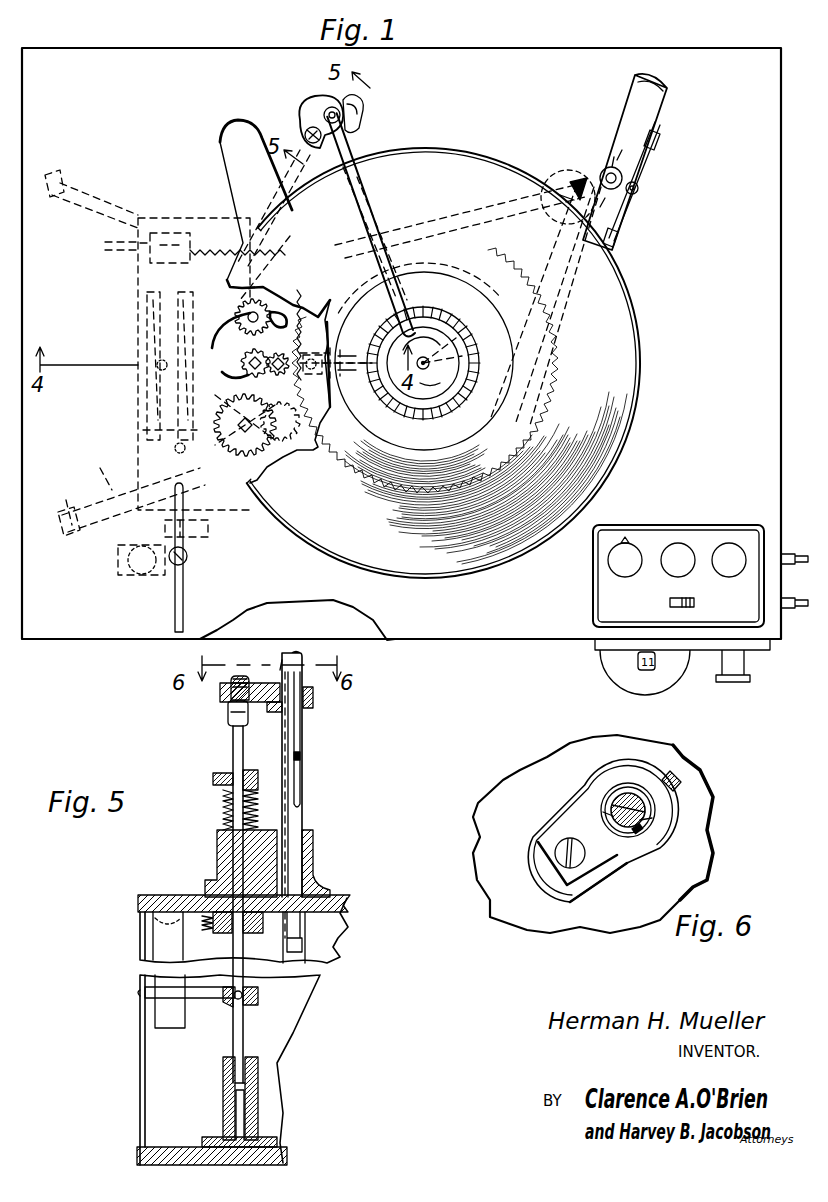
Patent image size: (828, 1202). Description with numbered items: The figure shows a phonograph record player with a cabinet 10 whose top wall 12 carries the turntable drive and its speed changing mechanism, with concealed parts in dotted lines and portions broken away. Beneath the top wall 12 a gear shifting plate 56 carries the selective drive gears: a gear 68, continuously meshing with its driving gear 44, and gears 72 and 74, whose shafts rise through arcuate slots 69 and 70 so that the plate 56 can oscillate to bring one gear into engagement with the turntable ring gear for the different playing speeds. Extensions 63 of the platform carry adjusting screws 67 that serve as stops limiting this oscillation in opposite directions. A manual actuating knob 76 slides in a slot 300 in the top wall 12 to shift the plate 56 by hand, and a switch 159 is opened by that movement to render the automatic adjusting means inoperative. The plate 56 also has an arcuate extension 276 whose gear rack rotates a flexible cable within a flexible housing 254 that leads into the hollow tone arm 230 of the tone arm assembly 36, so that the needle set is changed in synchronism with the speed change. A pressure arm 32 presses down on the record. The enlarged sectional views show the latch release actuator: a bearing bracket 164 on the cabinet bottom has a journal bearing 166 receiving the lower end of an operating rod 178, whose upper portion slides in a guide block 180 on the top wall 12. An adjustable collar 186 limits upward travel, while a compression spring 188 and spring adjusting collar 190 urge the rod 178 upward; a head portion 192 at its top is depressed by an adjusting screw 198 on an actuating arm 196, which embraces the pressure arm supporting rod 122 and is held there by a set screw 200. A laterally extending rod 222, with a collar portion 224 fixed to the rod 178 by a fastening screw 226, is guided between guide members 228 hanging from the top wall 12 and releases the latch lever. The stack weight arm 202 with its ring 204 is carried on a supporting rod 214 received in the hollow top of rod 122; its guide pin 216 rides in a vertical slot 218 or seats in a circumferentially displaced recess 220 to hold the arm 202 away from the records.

In FIG. 5, the cabinet 10 is at (333, 938).
In FIG. 1, the top wall 12 is at (503, 632).
In FIG. 5, the top wall 12 is at (153, 893).
In FIG. 6, the pressure arm 32 is at (652, 893).
In FIG. 1, the tone arm assembly 36 is at (659, 175).
In FIG. 1, the driving gear 44 is at (246, 364).
In FIG. 1, the gear shifting plate 56 is at (200, 240).
In FIG. 1, the extensions 63 is at (95, 495).
In FIG. 1, the adjusting screws 67 is at (66, 520).
In FIG. 1, the gear 68 is at (334, 335).
In FIG. 1, the arcuate slot 69 is at (222, 327).
In FIG. 1, the arcuate slot 70 is at (296, 410).
In FIG. 1, the gear 72 is at (246, 310).
In FIG. 1, the gear 74 is at (243, 443).
In FIG. 1, the manual actuating knob 76 is at (188, 556).
In FIG. 5, the pressure arm supporting rod 122 is at (288, 733).
In FIG. 6, the pressure arm supporting rod 122 is at (655, 812).
In FIG. 1, the switch 159 is at (140, 575).
In FIG. 5, the bearing bracket 164 is at (220, 1140).
In FIG. 5, the journal bearing 166 is at (248, 1095).
In FIG. 5, the operating rod 178 is at (240, 842).
In FIG. 5, the guide block 180 is at (232, 857).
In FIG. 5, the adjustable collar 186 is at (245, 936).
In FIG. 5, the compression spring 188 is at (225, 803).
In FIG. 5, the spring adjusting collar 190 is at (252, 770).
In FIG. 5, the head portion 192 is at (230, 714).
In FIG. 1, the actuating arm 196 is at (318, 120).
In FIG. 5, the actuating arm 196 is at (258, 690).
In FIG. 6, the actuating arm 196 is at (583, 827).
In FIG. 5, the adjusting screw 198 is at (229, 694).
In FIG. 6, the adjusting screw 198 is at (560, 862).
In FIG. 5, the set screw 200 is at (321, 705).
In FIG. 6, the set screw 200 is at (677, 783).
In FIG. 1, the arm 202 is at (374, 213).
In FIG. 1, the ring 204 is at (436, 408).
In FIG. 5, the supporting rod 214 is at (292, 923).
In FIG. 6, the supporting rod 214 is at (632, 798).
In FIG. 5, the guide pin 216 is at (300, 753).
In FIG. 6, the guide pin 216 is at (641, 833).
In FIG. 5, the vertical slot 218 is at (302, 780).
In FIG. 6, the vertical slot 218 is at (640, 835).
In FIG. 5, the recess 220 is at (282, 670).
In FIG. 6, the recess 220 is at (605, 826).
In FIG. 5, the laterally extending rod 222 is at (163, 995).
In FIG. 5, the collar portion 224 is at (258, 1000).
In FIG. 5, the fastening screw 226 is at (233, 998).
In FIG. 5, the guide members 228 is at (167, 950).
In FIG. 1, the tone arm 230 is at (627, 122).
In FIG. 1, the flexible housing 254 is at (580, 185).
In FIG. 1, the arcuate extension 276 is at (340, 243).
In FIG. 1, the slot 300 is at (212, 604).